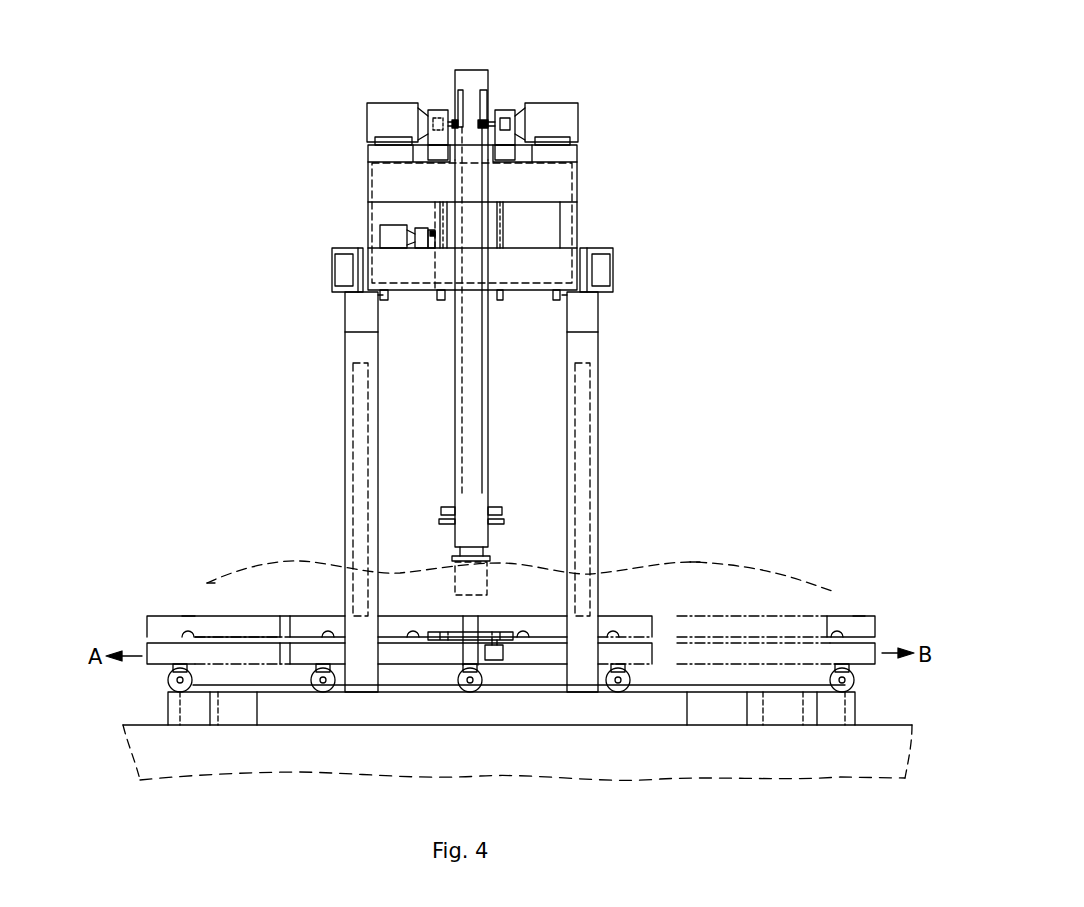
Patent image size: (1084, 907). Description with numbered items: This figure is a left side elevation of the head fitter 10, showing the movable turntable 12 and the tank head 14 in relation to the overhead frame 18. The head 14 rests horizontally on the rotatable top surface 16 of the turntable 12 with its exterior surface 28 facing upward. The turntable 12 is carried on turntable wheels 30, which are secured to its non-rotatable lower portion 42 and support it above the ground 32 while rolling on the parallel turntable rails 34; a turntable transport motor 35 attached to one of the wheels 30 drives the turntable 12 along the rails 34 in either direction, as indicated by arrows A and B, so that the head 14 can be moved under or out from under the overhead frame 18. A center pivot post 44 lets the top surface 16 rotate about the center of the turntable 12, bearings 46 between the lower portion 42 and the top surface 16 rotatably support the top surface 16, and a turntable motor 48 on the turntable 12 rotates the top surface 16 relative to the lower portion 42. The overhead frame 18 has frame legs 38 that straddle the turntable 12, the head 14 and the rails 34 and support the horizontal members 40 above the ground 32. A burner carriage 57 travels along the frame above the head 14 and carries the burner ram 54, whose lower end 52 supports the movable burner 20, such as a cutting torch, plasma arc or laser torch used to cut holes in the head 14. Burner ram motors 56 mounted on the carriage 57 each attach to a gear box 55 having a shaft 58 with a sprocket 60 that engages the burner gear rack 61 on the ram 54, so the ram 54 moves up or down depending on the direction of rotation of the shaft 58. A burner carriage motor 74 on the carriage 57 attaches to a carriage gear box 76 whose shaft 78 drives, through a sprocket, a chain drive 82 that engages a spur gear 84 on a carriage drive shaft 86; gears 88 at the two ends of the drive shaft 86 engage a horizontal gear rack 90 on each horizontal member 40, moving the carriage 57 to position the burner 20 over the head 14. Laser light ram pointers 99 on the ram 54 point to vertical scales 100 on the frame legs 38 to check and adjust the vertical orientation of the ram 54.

The head fitter 10 is at (624, 109).
The movable turntable 12 is at (158, 630).
The tank head 14 is at (207, 583).
The rotatable top surface 16 is at (182, 616).
The overhead frame 18 is at (332, 255).
The movable burner 20 is at (455, 580).
The exterior surface 28 is at (255, 568).
The turntable wheels 30 is at (168, 680).
The ground 32 is at (895, 725).
The turntable rails 34 is at (705, 686).
The turntable transport motor 35 is at (192, 678).
The frame legs 38 is at (345, 340).
The horizontal members 40 is at (345, 310).
The non-rotatable lower portion 42 is at (158, 658).
The center pivot post 44 is at (477, 632).
The bearings 46 is at (190, 637).
The turntable motor 48 is at (503, 662).
The lower end 52 is at (490, 556).
The burner ram 54 is at (470, 477).
The gear box 55 is at (437, 110).
The burner ram motors 56 is at (392, 102).
The burner carriage 57 is at (578, 185).
The shaft 58 is at (455, 125).
The sprocket 60 is at (462, 123).
The burner gear rack 61 is at (460, 448).
The burner carriage motor 74 is at (387, 225).
The carriage gear box 76 is at (420, 228).
The shaft 78 is at (432, 226).
The chain drive 82 is at (435, 277).
The spur gear 84 is at (433, 298).
The carriage drive shaft 86 is at (520, 298).
The gears 88 is at (380, 303).
The horizontal gear rack 90 is at (380, 310).
The laser light ram pointers 99 is at (445, 508).
The vertical scales 100 is at (355, 490).